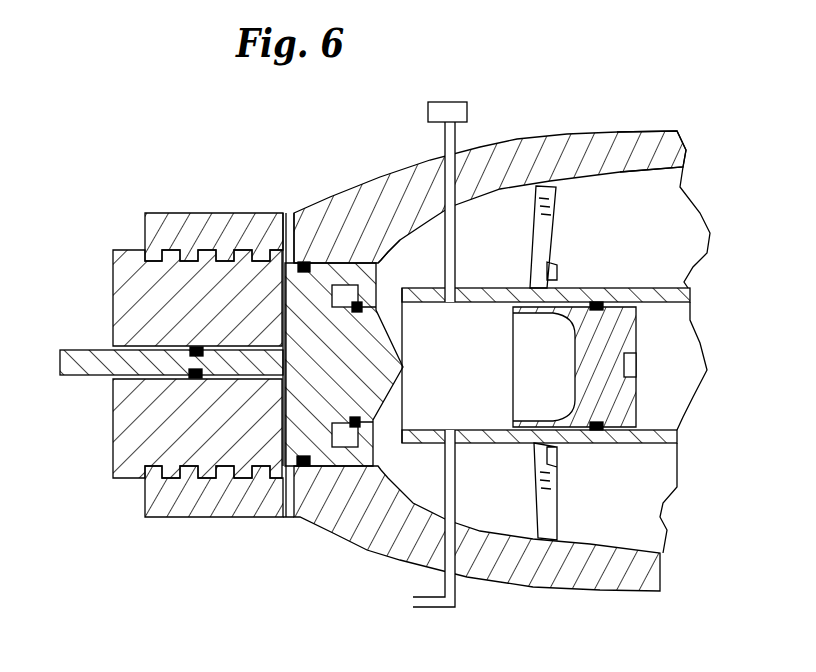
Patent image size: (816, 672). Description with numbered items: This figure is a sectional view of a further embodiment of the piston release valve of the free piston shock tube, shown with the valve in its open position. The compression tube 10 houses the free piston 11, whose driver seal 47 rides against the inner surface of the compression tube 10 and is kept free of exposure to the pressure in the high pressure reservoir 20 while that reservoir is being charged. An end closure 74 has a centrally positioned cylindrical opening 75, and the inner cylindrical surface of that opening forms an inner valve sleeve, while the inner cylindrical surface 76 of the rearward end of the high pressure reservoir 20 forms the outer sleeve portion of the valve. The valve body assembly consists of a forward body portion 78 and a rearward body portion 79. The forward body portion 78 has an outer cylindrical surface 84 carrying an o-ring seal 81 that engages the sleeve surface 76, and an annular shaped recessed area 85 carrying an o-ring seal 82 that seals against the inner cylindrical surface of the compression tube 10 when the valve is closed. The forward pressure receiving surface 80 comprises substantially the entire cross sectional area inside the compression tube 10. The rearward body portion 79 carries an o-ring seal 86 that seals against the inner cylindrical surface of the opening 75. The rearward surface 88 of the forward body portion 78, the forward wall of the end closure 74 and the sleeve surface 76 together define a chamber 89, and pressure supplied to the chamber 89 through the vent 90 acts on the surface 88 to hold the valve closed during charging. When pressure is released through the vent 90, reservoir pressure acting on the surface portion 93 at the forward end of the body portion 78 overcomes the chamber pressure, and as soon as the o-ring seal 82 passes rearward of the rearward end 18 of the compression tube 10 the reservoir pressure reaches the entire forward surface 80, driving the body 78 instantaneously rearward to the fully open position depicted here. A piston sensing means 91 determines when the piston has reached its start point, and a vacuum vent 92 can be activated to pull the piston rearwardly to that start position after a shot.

The compression tube 10 is at (675, 290).
The free piston 11 is at (617, 341).
The rearward end of the compression tube 18 is at (412, 255).
The high pressure reservoir 20 is at (608, 155).
The driver seal 47 is at (598, 300).
The end closure 74 is at (148, 270).
The cylindrical opening 75 is at (192, 350).
The inner cylindrical surface 76 is at (350, 284).
The forward body portion 78 is at (283, 466).
The rearward body portion 79 is at (99, 366).
The forward pressure receiving surface 80 is at (376, 500).
The o-ring seal 81 is at (297, 255).
The o-ring seal 82 is at (350, 447).
The outer cylindrical surface 84 is at (303, 263).
The annular shaped recessed area 85 is at (318, 468).
The o-ring seal 86 is at (197, 346).
The rearward surface 88 is at (335, 372).
The chamber 89 is at (285, 290).
The vent 90 is at (275, 245).
The piston sensing means 91 is at (456, 112).
The vacuum vent 92 is at (455, 557).
The surface portion 93 is at (386, 260).